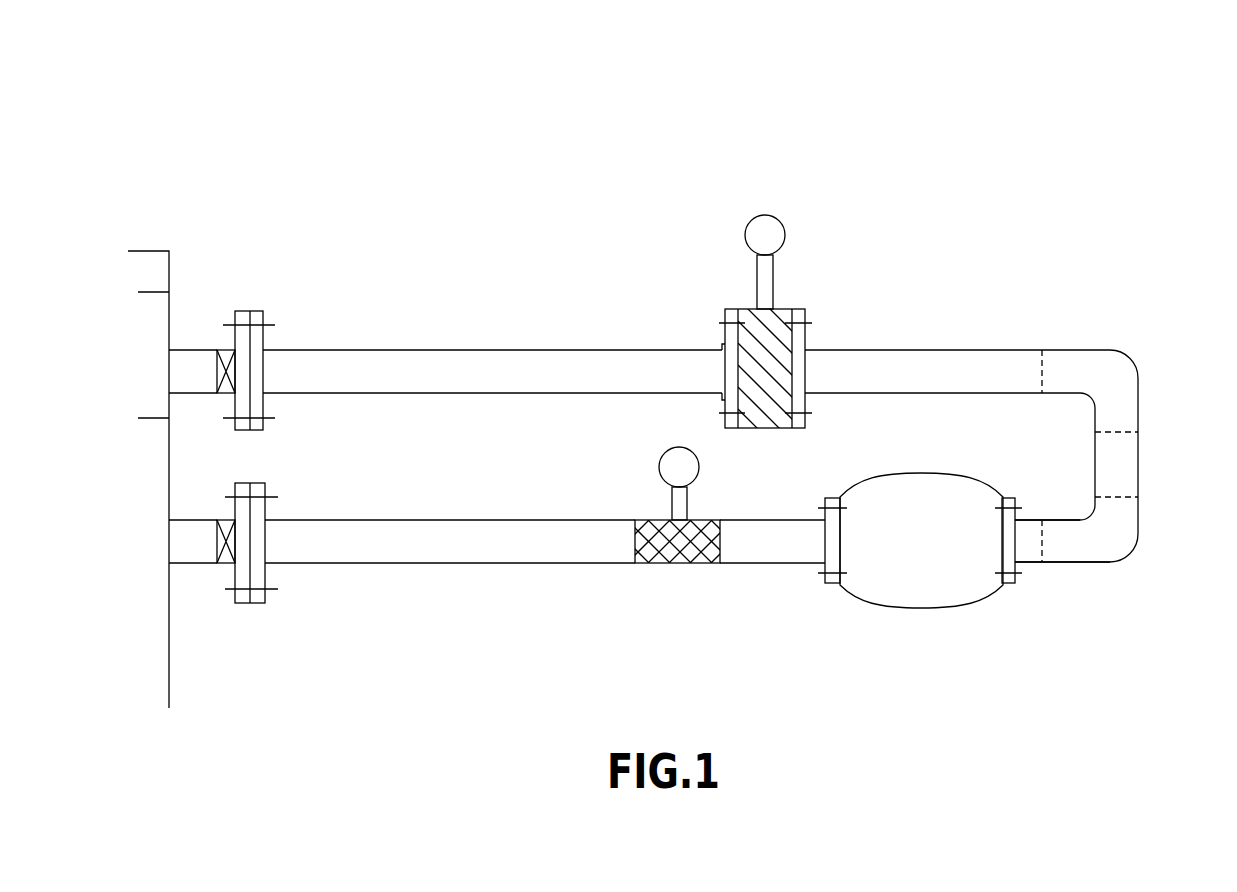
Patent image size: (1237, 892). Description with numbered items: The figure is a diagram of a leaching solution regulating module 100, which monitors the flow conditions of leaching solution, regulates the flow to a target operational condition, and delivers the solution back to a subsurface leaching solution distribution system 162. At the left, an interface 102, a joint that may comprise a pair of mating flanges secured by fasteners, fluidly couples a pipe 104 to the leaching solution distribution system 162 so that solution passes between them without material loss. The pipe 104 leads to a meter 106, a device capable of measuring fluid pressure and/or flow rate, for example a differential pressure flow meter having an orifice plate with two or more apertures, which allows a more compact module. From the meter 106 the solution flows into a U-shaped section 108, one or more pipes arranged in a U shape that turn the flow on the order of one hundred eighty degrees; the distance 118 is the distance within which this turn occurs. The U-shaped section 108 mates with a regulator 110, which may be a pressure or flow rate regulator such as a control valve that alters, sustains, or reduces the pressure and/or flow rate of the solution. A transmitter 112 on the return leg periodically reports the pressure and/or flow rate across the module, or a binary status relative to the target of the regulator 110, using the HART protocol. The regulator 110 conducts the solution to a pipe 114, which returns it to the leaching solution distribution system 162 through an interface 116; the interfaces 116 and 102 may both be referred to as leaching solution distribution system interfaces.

The leaching solution regulating module 100 is at (300, 158).
The interface 102 is at (228, 288).
The pipe 104 is at (640, 348).
The meter 106 is at (778, 221).
The U-shaped section 108 is at (1115, 350).
The regulator 110 is at (978, 600).
The transmitter 112 is at (668, 563).
The pipe 114 is at (540, 563).
The interface 116 is at (262, 483).
The distance 118 is at (1130, 350).
The leaching solution distribution system 162 is at (169, 478).